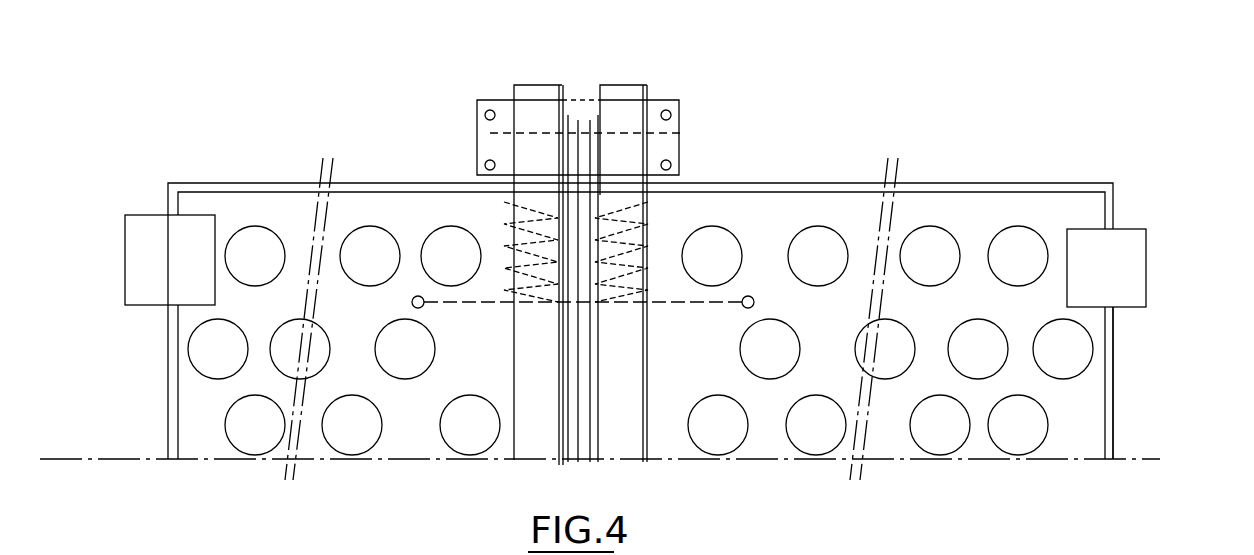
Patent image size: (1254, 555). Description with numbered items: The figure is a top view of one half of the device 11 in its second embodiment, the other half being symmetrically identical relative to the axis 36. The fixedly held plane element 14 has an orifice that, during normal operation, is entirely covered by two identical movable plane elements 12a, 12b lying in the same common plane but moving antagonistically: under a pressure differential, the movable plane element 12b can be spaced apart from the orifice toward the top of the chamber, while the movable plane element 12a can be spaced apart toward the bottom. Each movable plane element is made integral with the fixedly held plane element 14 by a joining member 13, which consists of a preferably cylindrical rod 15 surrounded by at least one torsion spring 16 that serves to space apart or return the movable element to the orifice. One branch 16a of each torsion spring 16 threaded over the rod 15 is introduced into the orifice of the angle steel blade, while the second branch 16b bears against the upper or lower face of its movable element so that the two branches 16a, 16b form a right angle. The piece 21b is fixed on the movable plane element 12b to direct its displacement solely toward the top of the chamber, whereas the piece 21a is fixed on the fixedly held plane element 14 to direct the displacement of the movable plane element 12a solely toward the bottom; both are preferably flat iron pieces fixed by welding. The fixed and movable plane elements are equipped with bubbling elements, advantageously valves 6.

The valves 6 is at (640, 340).
The device 11 is at (1122, 358).
The movable plane element 12a is at (418, 461).
The movable plane element 12b is at (965, 461).
The joining member 13 is at (573, 77).
The fixedly held plane element 14 is at (298, 173).
The rod 15 is at (580, 275).
The torsion spring 16 is at (660, 214).
The branch of torsion spring 16a is at (550, 148).
The second branch of torsion spring 16b is at (452, 306).
The piece 21a is at (170, 260).
The piece 21b is at (1106, 268).
The axis 36 is at (135, 465).